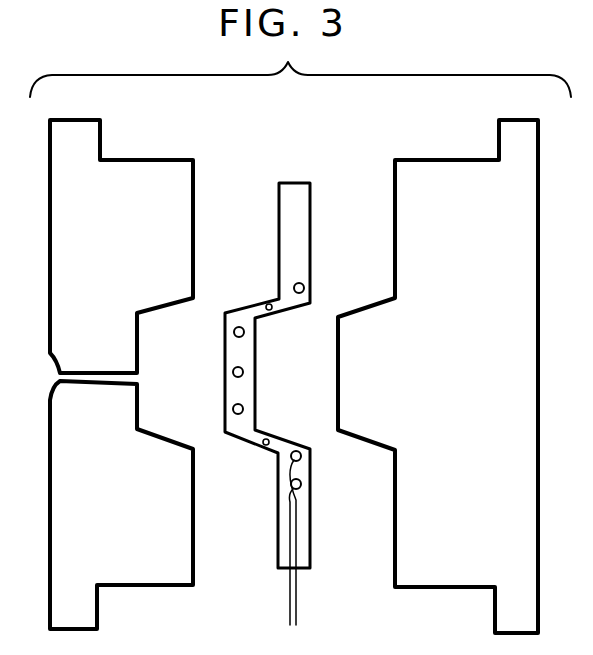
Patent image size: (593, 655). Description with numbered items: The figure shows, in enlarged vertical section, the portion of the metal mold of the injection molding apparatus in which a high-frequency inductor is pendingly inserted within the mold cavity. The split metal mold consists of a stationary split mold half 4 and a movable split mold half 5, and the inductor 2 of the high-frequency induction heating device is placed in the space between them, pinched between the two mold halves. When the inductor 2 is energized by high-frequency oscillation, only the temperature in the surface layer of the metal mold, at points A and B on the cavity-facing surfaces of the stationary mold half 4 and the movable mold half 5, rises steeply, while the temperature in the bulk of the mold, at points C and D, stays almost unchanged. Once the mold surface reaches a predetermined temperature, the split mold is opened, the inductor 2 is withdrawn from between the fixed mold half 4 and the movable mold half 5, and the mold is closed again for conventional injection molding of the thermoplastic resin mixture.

The inductor 2 is at (311, 530).
The stationary split mold half 4 is at (120, 528).
The movable split mold half 5 is at (467, 528).
The surface layer point A is at (138, 345).
The surface layer point B is at (337, 371).
The bulk point C is at (106, 238).
The bulk point D is at (443, 370).